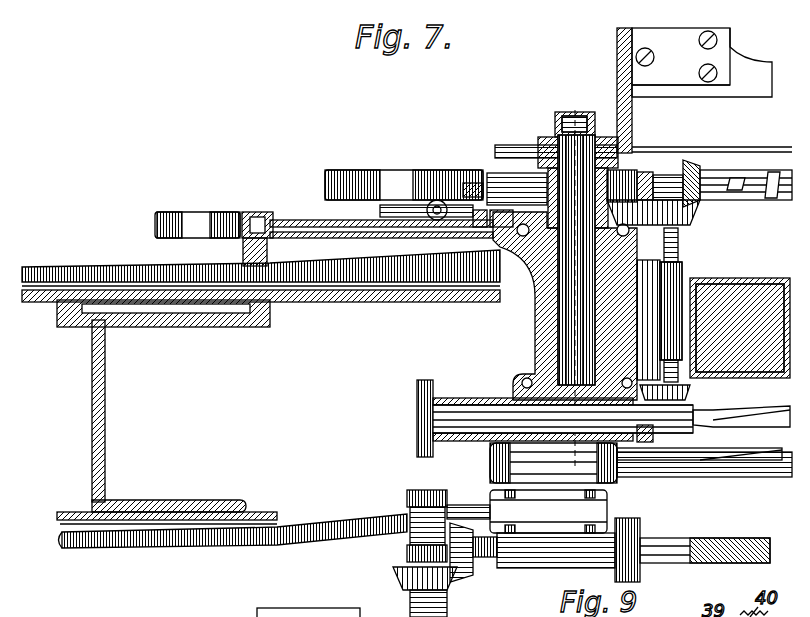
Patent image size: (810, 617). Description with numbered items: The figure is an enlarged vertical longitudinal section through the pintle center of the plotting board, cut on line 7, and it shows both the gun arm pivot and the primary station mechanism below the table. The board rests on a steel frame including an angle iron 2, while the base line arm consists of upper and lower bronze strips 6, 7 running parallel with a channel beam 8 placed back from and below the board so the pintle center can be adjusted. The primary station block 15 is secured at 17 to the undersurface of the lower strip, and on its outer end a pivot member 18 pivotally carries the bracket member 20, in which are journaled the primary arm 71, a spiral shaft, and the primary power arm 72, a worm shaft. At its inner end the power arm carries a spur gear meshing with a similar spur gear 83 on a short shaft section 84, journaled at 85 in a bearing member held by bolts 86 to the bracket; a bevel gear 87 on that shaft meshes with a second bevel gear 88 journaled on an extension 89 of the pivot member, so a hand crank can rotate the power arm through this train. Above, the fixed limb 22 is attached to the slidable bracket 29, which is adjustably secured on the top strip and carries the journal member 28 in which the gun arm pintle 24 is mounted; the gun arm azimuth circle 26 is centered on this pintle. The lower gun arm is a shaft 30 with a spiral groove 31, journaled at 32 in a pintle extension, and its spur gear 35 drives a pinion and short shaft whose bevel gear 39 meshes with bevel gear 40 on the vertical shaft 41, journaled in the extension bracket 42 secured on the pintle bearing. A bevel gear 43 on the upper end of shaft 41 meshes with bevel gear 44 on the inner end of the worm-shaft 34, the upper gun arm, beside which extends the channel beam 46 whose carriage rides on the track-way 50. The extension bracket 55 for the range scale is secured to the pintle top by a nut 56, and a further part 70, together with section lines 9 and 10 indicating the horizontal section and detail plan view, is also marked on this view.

The angle iron 2 is at (740, 328).
The bronze strip 6 is at (245, 318).
The bronze strip 7 is at (327, 616).
The channel beam 8 is at (574, 110).
The section line 9 is at (663, 350).
The section line 10 is at (640, 485).
The primary station block 15 is at (233, 523).
The securing point 17 is at (214, 500).
The pivot member 18 is at (447, 492).
The bracket member 20 is at (490, 488).
The fixed limb 22 is at (270, 208).
The gun arm pintle 24 is at (576, 290).
The gun arm azimuth circle 26 is at (352, 238).
The journal member 28 is at (536, 318).
The slidable bracket 29 is at (398, 273).
The lower gun arm shaft 30 is at (699, 443).
The spiral groove 31 is at (741, 409).
The journal 32 is at (533, 409).
The worm-shaft 34 is at (752, 178).
The spur-gear 35 is at (538, 418).
The bevel gear 39 is at (653, 440).
The bevel gear 40 is at (693, 392).
The vertical shaft 41 is at (680, 248).
The extension bracket 42 is at (657, 321).
The bevel gear 43 is at (685, 227).
The bevel gear 44 is at (690, 162).
The channel beam 46 is at (668, 150).
The track-way 50 is at (436, 192).
The extension bracket 55 is at (673, 90).
The nut 56 is at (558, 116).
The bracket 70 is at (702, 62).
The primary arm 71 is at (762, 538).
The primary power arm 72 is at (745, 478).
The spur gear 83 is at (658, 522).
The short shaft section 84 is at (487, 560).
The journal 85 is at (556, 550).
The bolts 86 is at (598, 527).
The bevel gear 87 is at (467, 585).
The bevel gear 88 is at (403, 578).
The extension 89 is at (407, 553).